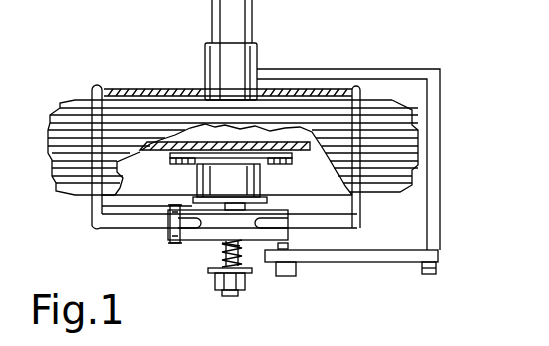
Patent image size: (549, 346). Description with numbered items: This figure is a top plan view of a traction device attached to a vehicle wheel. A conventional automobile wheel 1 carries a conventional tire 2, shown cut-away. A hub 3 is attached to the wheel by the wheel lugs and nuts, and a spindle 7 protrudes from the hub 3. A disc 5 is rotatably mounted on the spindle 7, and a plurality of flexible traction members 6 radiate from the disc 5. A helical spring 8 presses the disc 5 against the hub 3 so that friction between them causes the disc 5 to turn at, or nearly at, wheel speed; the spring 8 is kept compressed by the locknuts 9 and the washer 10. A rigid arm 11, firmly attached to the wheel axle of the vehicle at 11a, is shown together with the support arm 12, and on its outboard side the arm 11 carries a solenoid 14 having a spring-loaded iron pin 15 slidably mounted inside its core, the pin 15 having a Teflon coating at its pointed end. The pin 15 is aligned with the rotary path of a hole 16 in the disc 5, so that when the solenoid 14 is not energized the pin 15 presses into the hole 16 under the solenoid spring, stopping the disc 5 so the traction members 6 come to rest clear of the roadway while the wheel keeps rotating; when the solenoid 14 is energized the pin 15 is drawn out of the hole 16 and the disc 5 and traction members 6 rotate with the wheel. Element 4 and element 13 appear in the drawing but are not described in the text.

The automobile wheel 1 is at (180, 143).
The tire 2 is at (50, 143).
The hub 3 is at (262, 181).
The base block 4 is at (284, 208).
The disc 5 is at (166, 238).
The flexible traction members 6 is at (90, 205).
The spindle 7 is at (231, 292).
The helical spring 8 is at (222, 250).
The locknuts 9 is at (244, 292).
The washer 10 is at (252, 274).
The rigid arm 11 is at (333, 69).
The attachment point to wheel axle 11a is at (257, 53).
The support arm 12 is at (440, 253).
The foot 13 is at (438, 267).
The solenoid 14 is at (298, 270).
The spring-loaded iron pin 15 is at (292, 246).
The hole 16 is at (238, 246).